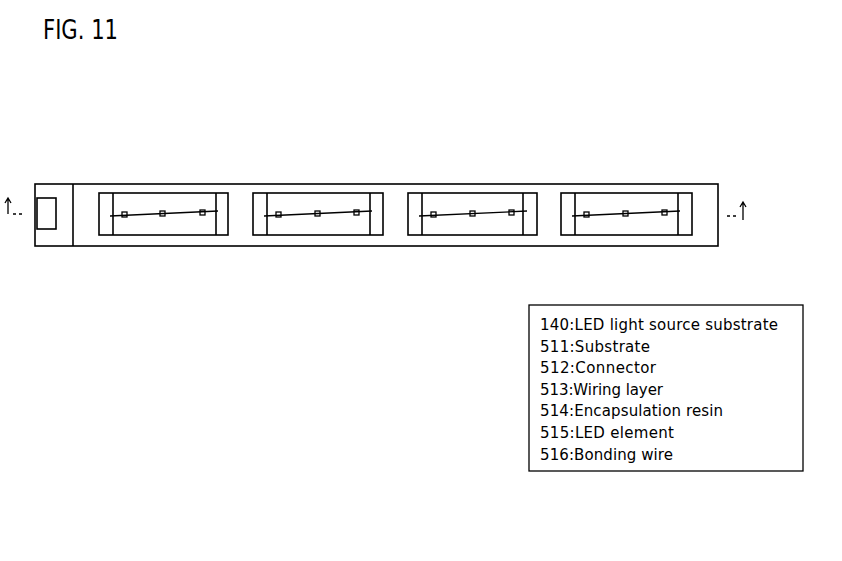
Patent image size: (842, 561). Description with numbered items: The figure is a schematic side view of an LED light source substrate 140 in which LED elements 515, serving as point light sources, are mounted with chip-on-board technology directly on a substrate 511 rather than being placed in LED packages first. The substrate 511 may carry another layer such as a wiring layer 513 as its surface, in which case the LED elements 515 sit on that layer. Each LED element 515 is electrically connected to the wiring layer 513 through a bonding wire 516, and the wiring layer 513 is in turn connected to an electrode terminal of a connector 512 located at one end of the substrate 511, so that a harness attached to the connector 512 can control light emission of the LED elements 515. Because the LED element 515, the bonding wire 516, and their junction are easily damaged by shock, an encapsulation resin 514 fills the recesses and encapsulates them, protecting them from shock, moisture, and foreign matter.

The LED light source substrate 140 is at (584, 132).
The substrate 511 is at (62, 241).
The connector 512 is at (47, 205).
The wiring layer 513 is at (106, 200).
The encapsulation resin 514 is at (203, 199).
The LED element 515 is at (123, 218).
The bonding wire 516 is at (183, 216).